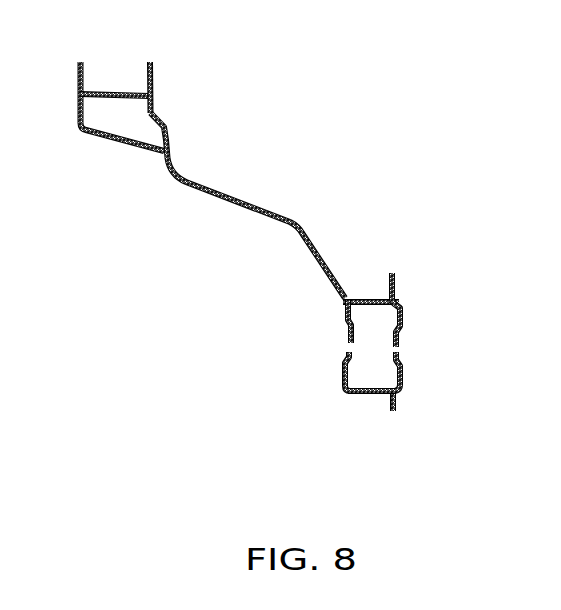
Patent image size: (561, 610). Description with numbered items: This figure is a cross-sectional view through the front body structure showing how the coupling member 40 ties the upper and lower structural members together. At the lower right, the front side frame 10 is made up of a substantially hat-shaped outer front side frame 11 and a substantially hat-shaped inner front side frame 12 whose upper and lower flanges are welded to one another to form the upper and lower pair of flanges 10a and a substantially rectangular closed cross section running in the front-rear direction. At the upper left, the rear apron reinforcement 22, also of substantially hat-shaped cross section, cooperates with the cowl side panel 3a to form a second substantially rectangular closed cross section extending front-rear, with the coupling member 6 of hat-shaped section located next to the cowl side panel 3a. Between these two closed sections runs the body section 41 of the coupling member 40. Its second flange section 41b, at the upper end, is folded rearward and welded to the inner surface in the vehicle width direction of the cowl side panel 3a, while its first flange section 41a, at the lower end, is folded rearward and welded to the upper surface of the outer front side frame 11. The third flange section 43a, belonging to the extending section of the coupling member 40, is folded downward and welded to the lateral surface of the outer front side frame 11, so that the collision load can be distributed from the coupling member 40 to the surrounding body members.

The cowl side panel 3a is at (153, 75).
The coupling member 6 is at (96, 132).
The front side frame 10 is at (343, 422).
The flanges 10a is at (398, 292).
The outer front side frame 11 is at (347, 376).
The inner front side frame 12 is at (403, 383).
The rear apron reinforcement 22 is at (112, 92).
The coupling member 40 is at (279, 191).
The body section 41 is at (303, 212).
The first flange section 41a is at (367, 300).
The second flange section 41b is at (176, 163).
The third flange section 43a is at (347, 308).